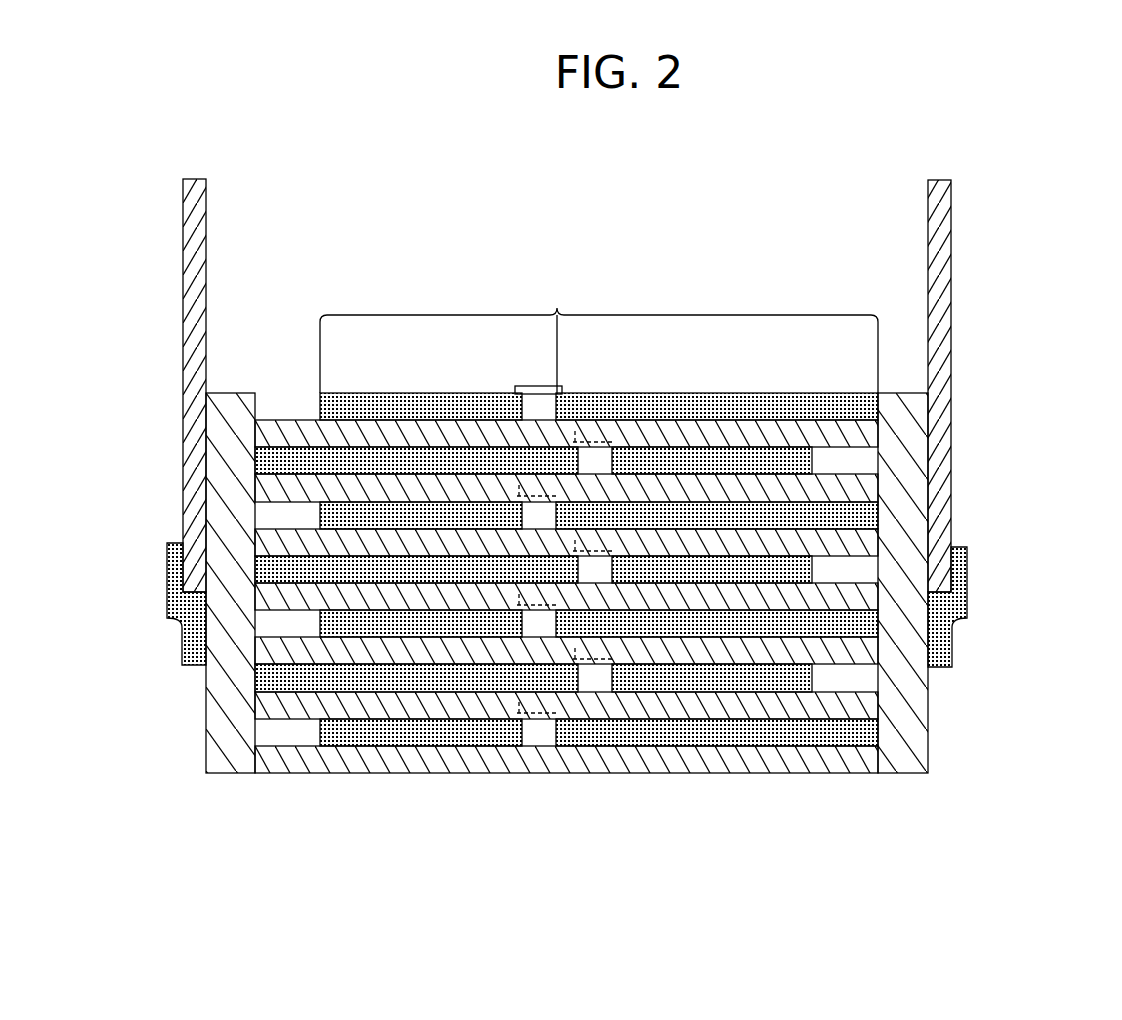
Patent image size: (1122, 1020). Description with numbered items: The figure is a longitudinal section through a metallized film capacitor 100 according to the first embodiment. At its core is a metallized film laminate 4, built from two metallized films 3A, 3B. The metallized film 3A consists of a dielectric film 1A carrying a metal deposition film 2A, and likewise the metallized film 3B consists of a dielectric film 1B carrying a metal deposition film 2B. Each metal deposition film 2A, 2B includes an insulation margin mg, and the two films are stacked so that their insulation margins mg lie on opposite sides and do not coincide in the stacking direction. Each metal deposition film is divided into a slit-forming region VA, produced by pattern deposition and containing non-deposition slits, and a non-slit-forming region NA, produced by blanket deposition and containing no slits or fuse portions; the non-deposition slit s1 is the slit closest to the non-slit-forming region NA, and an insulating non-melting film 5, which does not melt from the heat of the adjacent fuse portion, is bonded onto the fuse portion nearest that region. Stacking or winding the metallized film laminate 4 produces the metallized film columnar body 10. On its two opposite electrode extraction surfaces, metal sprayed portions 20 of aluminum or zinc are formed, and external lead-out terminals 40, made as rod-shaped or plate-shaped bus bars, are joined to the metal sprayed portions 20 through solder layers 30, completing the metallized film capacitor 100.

The metallized film capacitor 100 is at (1033, 203).
The metallized film columnar body 10 is at (805, 282).
The metal sprayed portion 20 is at (215, 690).
The solder layer 30 is at (178, 608).
The external lead-out terminal 40 is at (190, 285).
The non-melting film 5 is at (358, 410).
The non-deposition slit s1 is at (542, 413).
The insulation margin mg is at (266, 530).
The slit-forming region VA is at (442, 338).
The non-slit-forming region NA is at (717, 338).
The dielectric film 1A is at (688, 705).
The metal deposition film 2A is at (748, 690).
The metallized film 3A is at (766, 822).
The dielectric film 1B is at (412, 750).
The metal deposition film 2B is at (466, 735).
The metallized film 3B is at (390, 822).
The metallized film laminate 4 is at (425, 858).